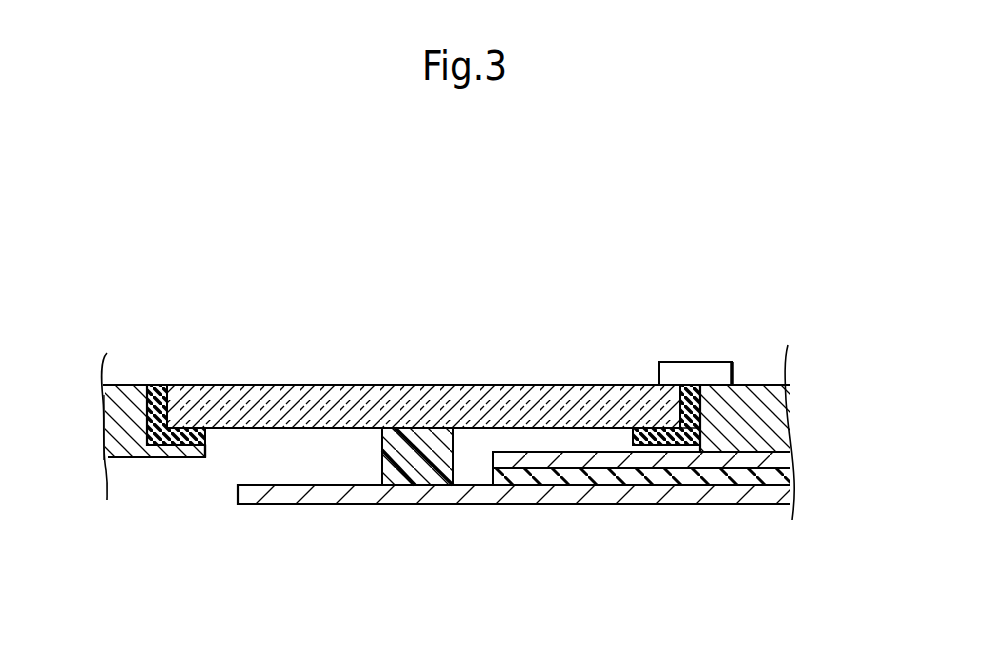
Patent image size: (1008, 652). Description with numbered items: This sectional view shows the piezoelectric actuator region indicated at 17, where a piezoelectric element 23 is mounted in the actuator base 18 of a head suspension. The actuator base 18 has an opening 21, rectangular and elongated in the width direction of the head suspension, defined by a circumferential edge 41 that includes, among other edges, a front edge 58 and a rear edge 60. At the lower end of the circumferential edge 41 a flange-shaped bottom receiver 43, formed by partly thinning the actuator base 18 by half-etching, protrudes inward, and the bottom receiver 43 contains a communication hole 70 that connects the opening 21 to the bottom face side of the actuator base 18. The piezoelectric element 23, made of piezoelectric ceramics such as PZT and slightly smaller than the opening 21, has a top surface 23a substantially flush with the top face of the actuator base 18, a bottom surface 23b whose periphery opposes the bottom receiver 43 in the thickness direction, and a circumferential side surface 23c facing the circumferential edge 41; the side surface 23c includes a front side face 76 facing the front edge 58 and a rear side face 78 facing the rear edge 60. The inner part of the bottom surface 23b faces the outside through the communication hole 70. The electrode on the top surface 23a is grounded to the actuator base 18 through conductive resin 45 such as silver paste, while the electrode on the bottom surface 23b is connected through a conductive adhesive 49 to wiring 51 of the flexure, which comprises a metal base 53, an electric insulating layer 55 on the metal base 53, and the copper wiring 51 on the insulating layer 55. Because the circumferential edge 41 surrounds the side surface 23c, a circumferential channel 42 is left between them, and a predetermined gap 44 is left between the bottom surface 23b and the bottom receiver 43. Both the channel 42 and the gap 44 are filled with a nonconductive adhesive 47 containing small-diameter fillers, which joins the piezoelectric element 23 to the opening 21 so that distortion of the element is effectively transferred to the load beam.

The liquid ejecting head unit 17 is at (592, 136).
The actuator base 18 is at (122, 385).
The opening 21 is at (147, 385).
The piezoelectric element 23 is at (392, 390).
The top surface 23a is at (252, 385).
The bottom surface 23b is at (247, 430).
The circumferential side surface 23c is at (150, 445).
The circumferential edge 41 is at (207, 386).
The circumferential channel 42 is at (155, 385).
The bottom receiver 43 is at (180, 452).
The gap 44 is at (268, 390).
The conductive resin 45 is at (720, 372).
The nonconductive adhesive 47 is at (161, 385).
The conductive adhesive 49 is at (440, 460).
The wiring 51 is at (383, 495).
The metal base 53 is at (780, 458).
The electric insulating layer 55 is at (777, 477).
The front edge 58 is at (677, 421).
The rear edge 60 is at (172, 408).
The communication hole 70 is at (210, 449).
The front side face 76 is at (700, 408).
The rear side face 78 is at (118, 420).